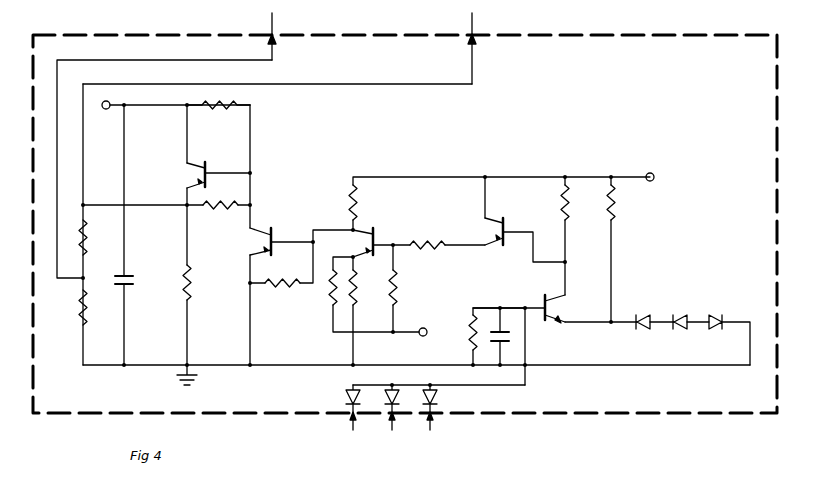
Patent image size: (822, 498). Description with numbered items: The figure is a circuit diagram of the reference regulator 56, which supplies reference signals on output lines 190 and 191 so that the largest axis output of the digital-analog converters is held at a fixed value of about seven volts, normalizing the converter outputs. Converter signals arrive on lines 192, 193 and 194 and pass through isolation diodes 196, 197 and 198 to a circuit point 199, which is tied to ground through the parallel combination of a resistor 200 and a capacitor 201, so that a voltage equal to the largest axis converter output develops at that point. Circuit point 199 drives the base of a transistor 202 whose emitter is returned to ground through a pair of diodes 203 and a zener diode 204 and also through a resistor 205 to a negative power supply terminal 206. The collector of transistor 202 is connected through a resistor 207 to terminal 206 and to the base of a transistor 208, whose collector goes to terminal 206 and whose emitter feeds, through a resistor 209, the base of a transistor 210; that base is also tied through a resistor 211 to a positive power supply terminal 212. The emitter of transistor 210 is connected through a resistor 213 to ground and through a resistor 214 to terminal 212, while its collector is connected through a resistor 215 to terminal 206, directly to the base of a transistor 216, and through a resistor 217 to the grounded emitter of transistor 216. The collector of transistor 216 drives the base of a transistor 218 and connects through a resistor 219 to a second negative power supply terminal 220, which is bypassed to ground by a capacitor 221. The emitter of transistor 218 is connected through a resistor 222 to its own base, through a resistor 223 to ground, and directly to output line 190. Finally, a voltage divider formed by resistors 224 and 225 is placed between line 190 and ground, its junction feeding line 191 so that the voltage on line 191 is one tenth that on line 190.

The reference regulator 56 is at (686, 34).
The output line 190 is at (474, 21).
The output line 191 is at (274, 21).
The line 192 is at (426, 431).
The line 193 is at (388, 431).
The line 194 is at (349, 431).
The isolation diode 196 is at (345, 396).
The isolation diode 197 is at (393, 387).
The isolation diode 198 is at (440, 396).
The circuit point 199 is at (523, 308).
The resistor 200 is at (470, 344).
The capacitor 201 is at (507, 341).
The transistor 202 is at (546, 323).
The pair of diodes 203 is at (677, 313).
The zener diode 204 is at (710, 315).
The resistor 205 is at (614, 203).
The negative power supply terminal 206 is at (653, 174).
The resistor 207 is at (562, 196).
The transistor 208 is at (505, 220).
The resistor 209 is at (416, 241).
The transistor 210 is at (374, 233).
The resistor 211 is at (394, 285).
The positive power supply terminal 212 is at (430, 318).
The resistor 213 is at (354, 284).
The resistor 214 is at (330, 306).
The resistor 215 is at (355, 201).
The transistor 216 is at (272, 232).
The resistor 217 is at (273, 287).
The transistor 218 is at (206, 167).
The resistor 219 is at (232, 107).
The negative power supply terminal 220 is at (102, 110).
The capacitor 221 is at (126, 278).
The resistor 222 is at (207, 210).
The resistor 223 is at (191, 280).
The resistor 224 is at (86, 229).
The resistor 225 is at (90, 300).